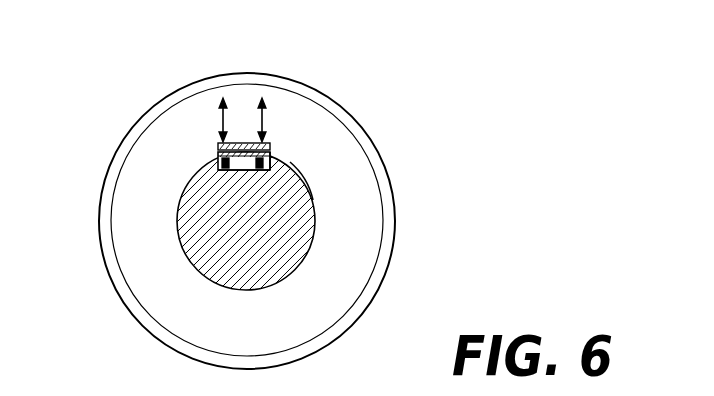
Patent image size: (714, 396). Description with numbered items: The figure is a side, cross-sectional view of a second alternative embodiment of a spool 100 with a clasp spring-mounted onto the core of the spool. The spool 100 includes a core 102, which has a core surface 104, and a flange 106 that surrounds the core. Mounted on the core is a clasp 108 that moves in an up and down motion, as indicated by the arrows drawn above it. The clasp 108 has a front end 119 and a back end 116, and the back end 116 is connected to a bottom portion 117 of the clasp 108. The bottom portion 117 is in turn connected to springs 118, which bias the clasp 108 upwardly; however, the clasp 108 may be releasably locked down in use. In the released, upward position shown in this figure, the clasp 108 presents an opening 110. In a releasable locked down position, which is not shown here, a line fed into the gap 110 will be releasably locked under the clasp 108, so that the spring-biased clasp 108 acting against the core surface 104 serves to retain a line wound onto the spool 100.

The spool 100 is at (395, 99).
The core 102 is at (300, 233).
The core surface 104 is at (310, 193).
The flange 106 is at (333, 272).
The clasp 108 is at (248, 142).
The opening 110 is at (218, 150).
The back end 116 is at (270, 147).
The bottom portion 117 is at (236, 171).
The springs 118 is at (262, 170).
The front end 119 is at (218, 145).